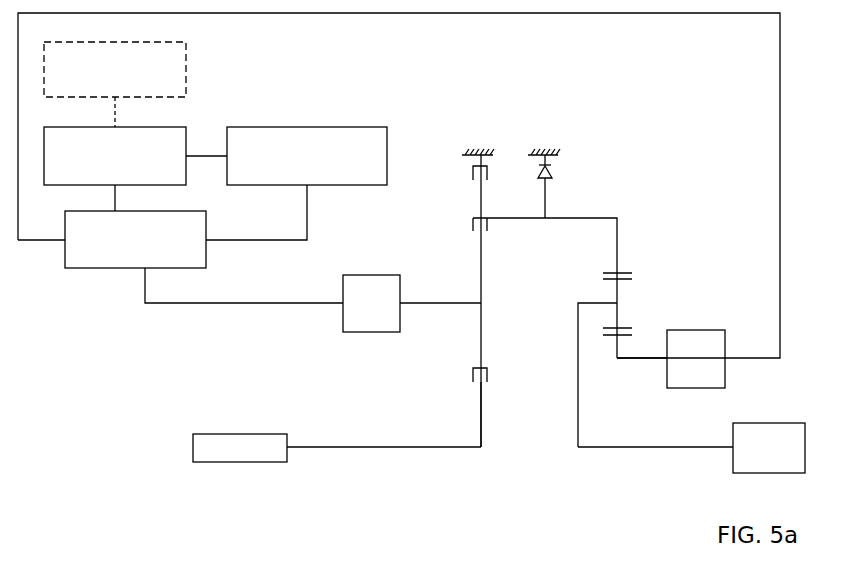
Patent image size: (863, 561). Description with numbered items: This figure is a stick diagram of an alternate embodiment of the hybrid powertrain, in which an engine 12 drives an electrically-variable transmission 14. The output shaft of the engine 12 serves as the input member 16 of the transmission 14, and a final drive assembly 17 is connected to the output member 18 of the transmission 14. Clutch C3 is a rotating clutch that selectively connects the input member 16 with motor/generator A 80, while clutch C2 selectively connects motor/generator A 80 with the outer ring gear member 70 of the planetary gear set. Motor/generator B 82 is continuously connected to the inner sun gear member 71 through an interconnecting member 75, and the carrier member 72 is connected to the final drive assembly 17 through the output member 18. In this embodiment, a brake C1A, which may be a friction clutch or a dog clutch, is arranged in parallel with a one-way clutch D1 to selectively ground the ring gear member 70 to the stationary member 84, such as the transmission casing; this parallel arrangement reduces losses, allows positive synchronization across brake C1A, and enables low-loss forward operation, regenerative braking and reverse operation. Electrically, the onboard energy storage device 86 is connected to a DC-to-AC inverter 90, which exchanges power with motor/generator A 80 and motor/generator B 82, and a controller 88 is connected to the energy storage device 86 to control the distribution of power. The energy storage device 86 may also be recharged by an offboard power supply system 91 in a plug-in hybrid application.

The engine 12 is at (253, 434).
The electrically-variable transmission 14 is at (520, 443).
The input member 16 is at (480, 432).
The final drive assembly 17 is at (763, 423).
The output member 18 is at (656, 449).
The outer ring gear member 70 is at (620, 272).
The inner sun gear member 71 is at (630, 337).
The carrier member 72 is at (590, 302).
The interconnecting member 75 is at (645, 360).
The motor/generator A 80 is at (383, 275).
The motor/generator B 82 is at (710, 330).
The stationary member 84 is at (470, 152).
The onboard energy storage device 86 is at (165, 127).
The controller 88 is at (355, 127).
The DC-to-AC power inverter 90 is at (110, 268).
The offboard power supply system 91 is at (186, 53).
The brake C1A is at (477, 186).
The clutch C2 is at (482, 248).
The clutch C3 is at (482, 400).
The one-way clutch D1 is at (562, 173).